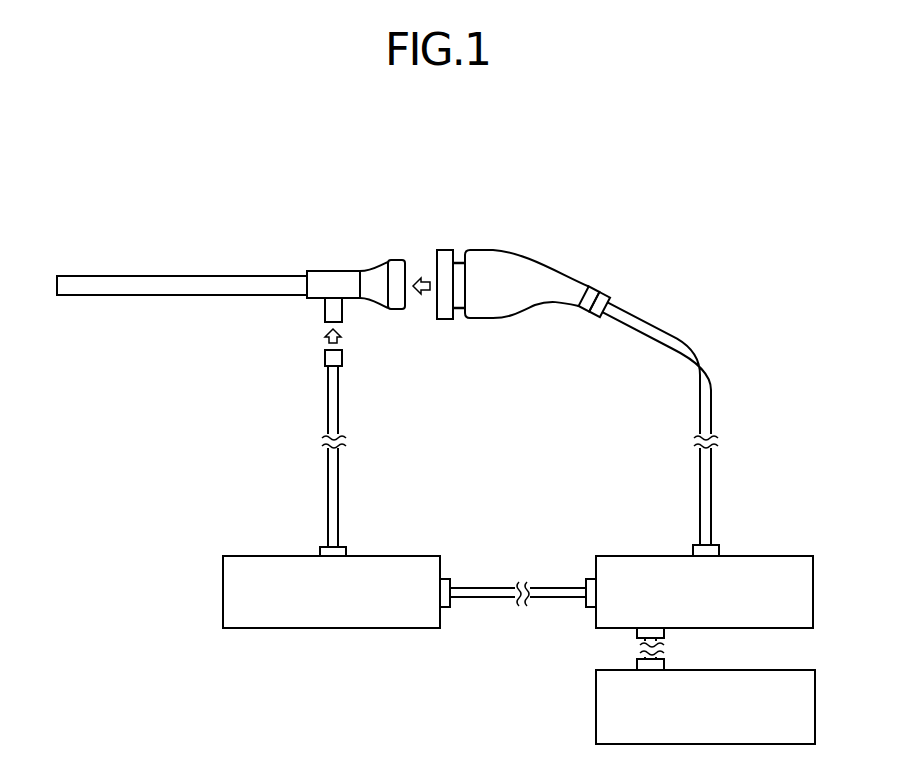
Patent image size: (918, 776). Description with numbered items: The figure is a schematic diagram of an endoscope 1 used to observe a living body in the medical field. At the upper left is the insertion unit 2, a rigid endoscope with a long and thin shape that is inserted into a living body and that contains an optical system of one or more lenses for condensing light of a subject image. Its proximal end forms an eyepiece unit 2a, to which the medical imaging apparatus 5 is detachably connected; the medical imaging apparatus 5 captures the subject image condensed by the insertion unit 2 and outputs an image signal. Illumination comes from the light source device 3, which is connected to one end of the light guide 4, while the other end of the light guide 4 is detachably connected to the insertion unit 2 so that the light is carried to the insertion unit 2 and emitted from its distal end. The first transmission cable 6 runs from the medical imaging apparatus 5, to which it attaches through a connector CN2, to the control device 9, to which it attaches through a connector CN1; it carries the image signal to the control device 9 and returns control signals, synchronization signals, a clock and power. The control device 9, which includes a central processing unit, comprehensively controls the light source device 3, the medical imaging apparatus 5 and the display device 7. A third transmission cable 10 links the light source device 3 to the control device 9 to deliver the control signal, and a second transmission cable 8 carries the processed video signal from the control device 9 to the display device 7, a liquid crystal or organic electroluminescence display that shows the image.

The endoscope 1 is at (664, 192).
The insertion unit 2 is at (257, 285).
The eyepiece unit 2a is at (397, 272).
The light source device 3 is at (384, 556).
The light guide 4 is at (327, 497).
The medical imaging apparatus 5 is at (488, 268).
The first transmission cable 6 is at (712, 402).
The display device 7 is at (764, 670).
The second transmission cable 8 is at (640, 655).
The control device 9 is at (764, 556).
The third transmission cable 10 is at (560, 585).
The connector CN1 is at (716, 545).
The connector CN2 is at (606, 297).